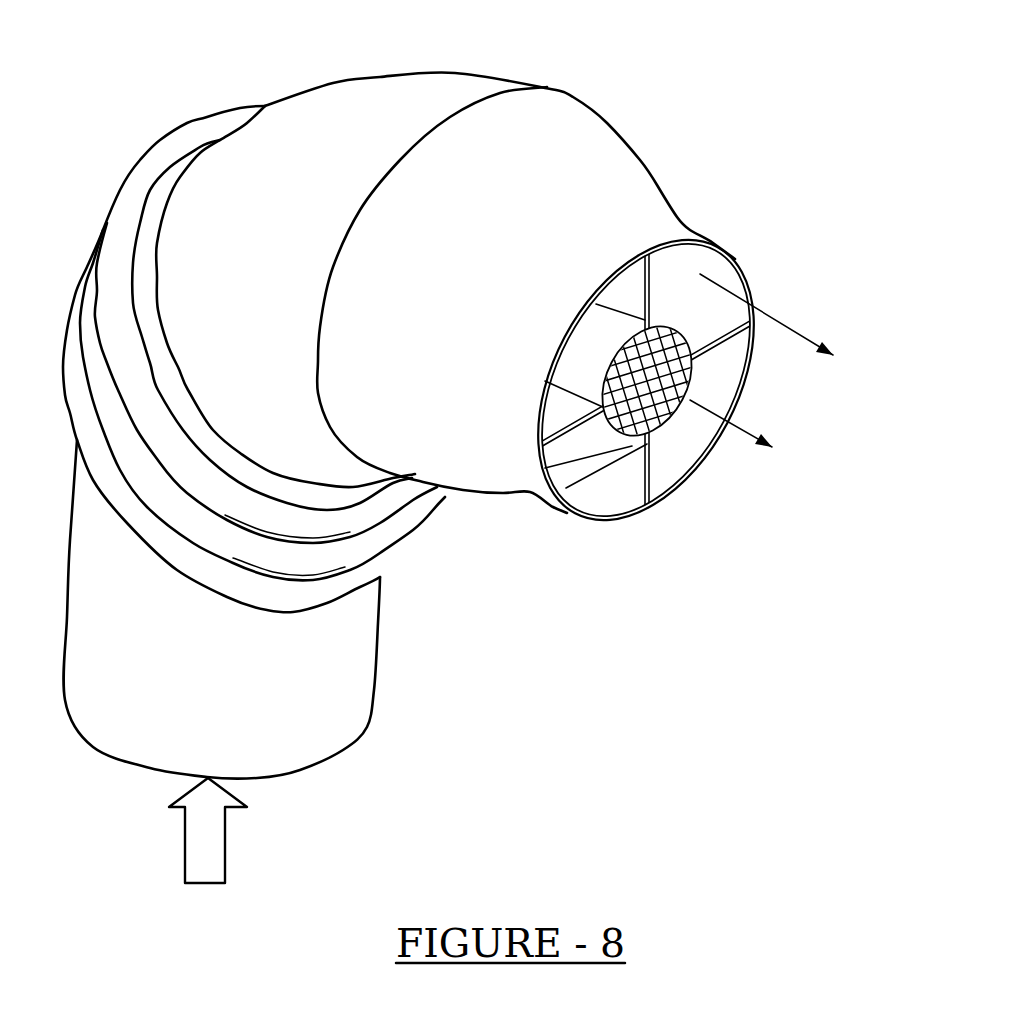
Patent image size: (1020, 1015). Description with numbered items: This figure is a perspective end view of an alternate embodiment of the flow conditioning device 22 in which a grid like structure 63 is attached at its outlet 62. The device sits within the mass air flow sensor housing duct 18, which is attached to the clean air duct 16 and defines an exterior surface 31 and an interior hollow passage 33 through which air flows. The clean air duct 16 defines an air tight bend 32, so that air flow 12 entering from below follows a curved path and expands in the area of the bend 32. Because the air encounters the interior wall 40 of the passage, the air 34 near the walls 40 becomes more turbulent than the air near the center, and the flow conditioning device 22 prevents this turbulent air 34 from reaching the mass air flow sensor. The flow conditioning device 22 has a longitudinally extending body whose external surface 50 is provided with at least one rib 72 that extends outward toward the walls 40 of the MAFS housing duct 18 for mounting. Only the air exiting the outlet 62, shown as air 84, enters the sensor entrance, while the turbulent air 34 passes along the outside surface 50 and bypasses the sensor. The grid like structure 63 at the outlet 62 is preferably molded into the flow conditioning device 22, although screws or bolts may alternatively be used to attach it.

The air flow 12 is at (184, 850).
The clean air duct 16 is at (342, 692).
The mass air flow sensor housing duct 18 is at (553, 85).
The flow conditioning device 22 is at (688, 388).
The exterior surface 31 is at (519, 263).
The bend 32 is at (427, 517).
The interior hollow passage 33 is at (689, 461).
The turbulent air 34 is at (797, 328).
The interior wall 40 is at (751, 281).
The external surface 50 is at (604, 378).
The outlet 62 is at (645, 466).
The grid like structure 63 is at (598, 462).
The rib 72 is at (685, 318).
The air exiting the outlet 84 is at (749, 418).